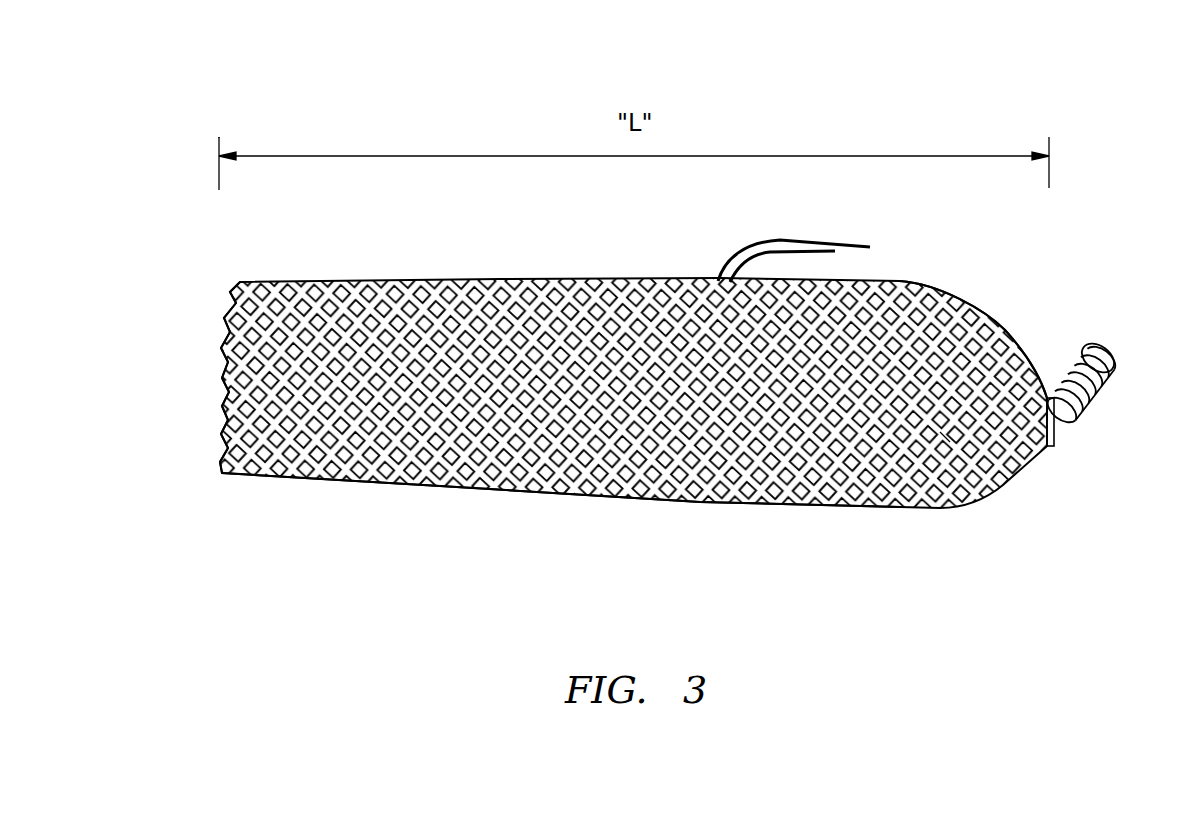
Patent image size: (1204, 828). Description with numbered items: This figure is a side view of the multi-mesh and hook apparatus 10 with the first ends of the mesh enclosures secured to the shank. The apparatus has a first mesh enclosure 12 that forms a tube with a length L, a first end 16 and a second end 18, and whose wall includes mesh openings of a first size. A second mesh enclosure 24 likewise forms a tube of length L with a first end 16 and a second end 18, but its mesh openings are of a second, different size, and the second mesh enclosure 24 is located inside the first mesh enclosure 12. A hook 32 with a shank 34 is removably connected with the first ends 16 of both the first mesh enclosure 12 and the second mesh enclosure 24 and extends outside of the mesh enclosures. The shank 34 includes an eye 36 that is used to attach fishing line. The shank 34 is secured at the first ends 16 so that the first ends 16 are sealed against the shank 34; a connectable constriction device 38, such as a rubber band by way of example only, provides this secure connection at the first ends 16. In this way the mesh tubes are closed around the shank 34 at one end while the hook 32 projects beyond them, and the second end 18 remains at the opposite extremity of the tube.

The multi-mesh and hook apparatus 10 is at (977, 86).
The first mesh enclosure 12 is at (507, 278).
The first end 16 is at (1003, 323).
The second end 18 is at (222, 407).
The second mesh enclosure 24 is at (525, 490).
The hook 32 is at (805, 242).
The shank 34 is at (945, 437).
The eye 36 is at (1115, 352).
The connectable constriction device 38 is at (1100, 407).